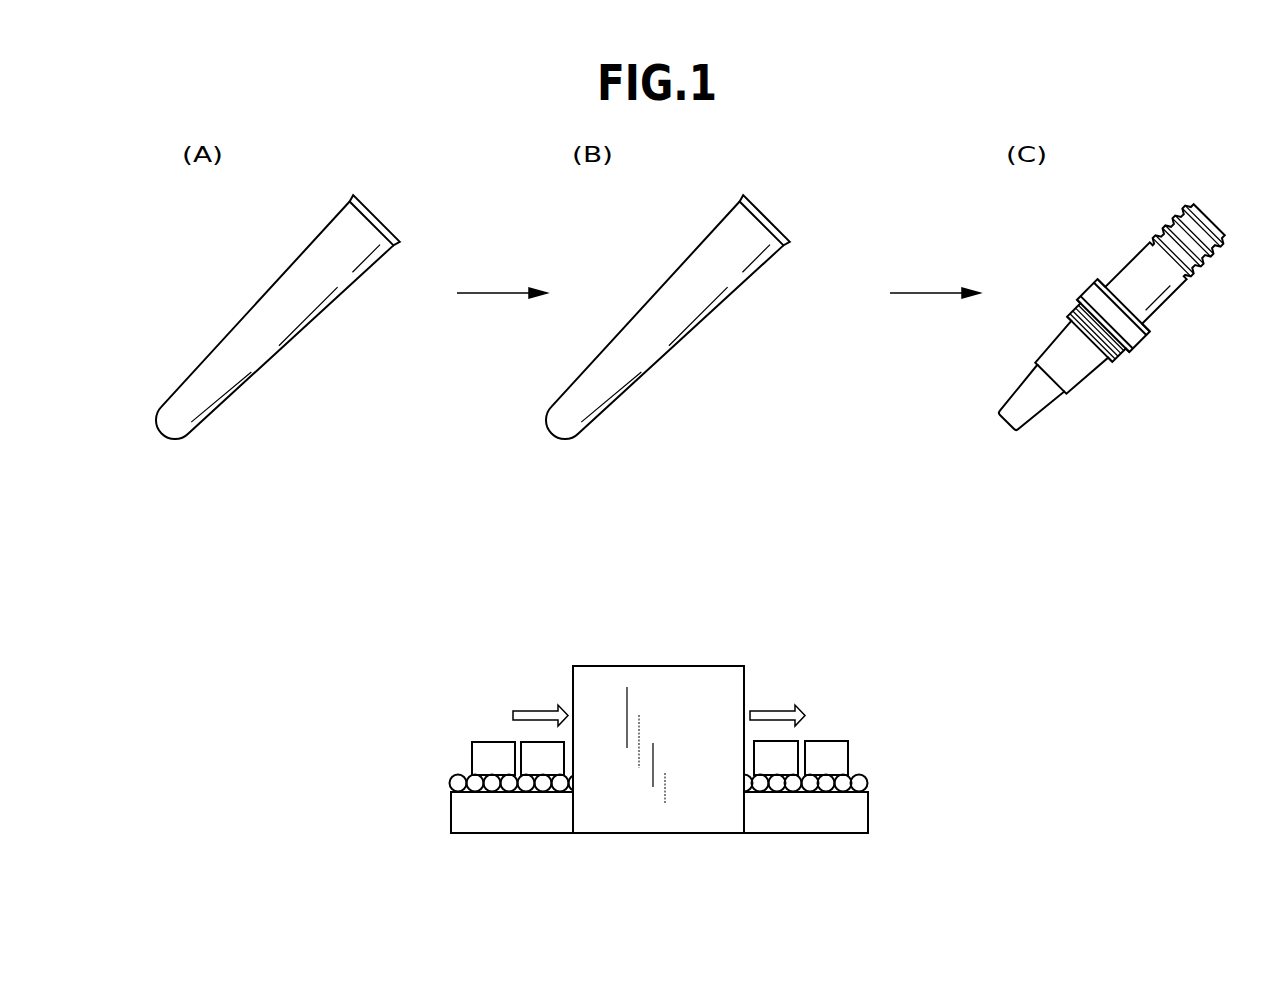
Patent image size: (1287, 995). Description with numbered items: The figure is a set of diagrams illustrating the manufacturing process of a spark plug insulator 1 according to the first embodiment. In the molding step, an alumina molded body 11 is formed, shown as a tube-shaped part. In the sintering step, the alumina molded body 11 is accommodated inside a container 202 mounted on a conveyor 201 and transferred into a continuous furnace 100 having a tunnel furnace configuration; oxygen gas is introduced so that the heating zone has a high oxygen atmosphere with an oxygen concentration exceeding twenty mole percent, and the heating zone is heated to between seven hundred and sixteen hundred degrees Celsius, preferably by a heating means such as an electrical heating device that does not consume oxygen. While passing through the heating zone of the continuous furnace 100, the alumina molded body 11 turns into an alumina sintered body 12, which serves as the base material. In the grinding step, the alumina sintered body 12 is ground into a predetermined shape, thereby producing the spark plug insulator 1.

The spark plug insulator 1 is at (1148, 355).
The alumina molded body 11 is at (328, 278).
The alumina sintered body 12 is at (718, 278).
The continuous furnace 100 is at (750, 625).
The conveyor 201 is at (480, 792).
The container 202 is at (495, 758).